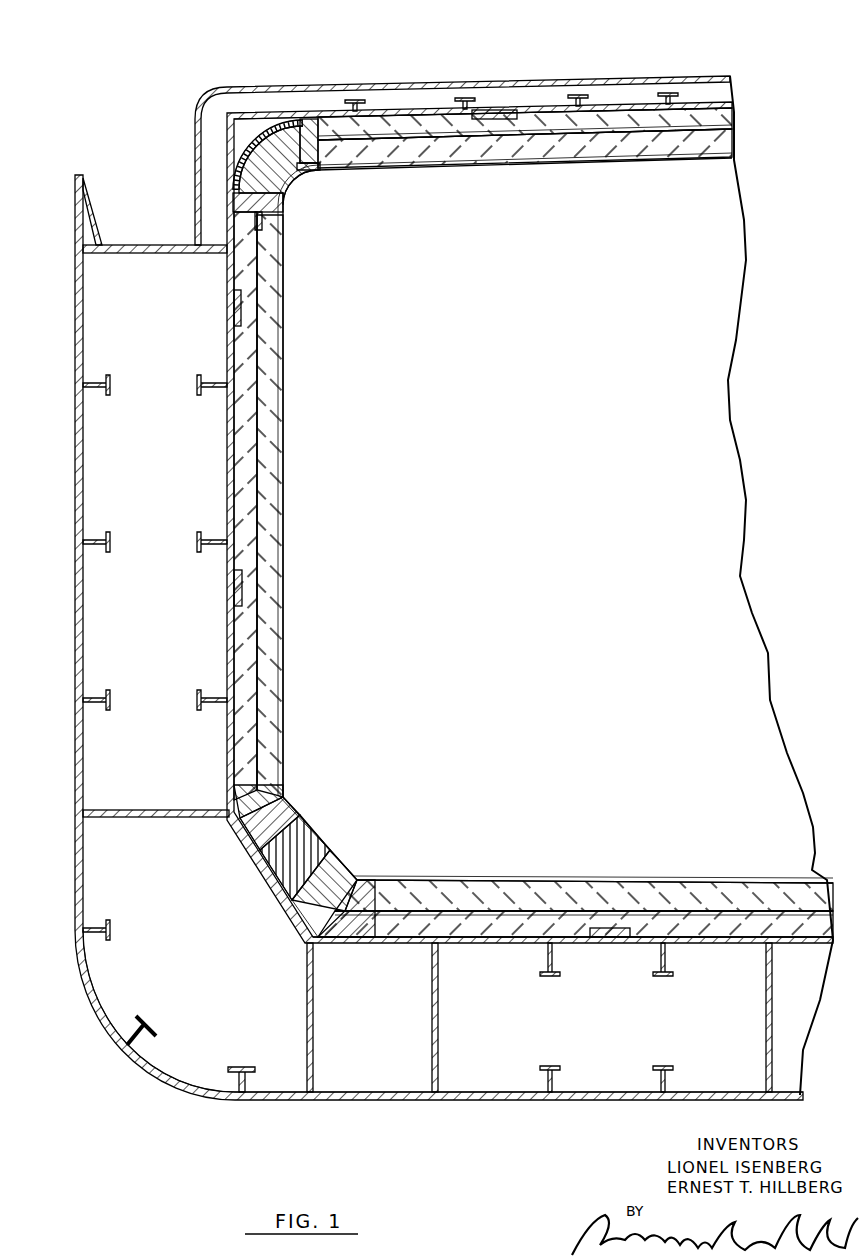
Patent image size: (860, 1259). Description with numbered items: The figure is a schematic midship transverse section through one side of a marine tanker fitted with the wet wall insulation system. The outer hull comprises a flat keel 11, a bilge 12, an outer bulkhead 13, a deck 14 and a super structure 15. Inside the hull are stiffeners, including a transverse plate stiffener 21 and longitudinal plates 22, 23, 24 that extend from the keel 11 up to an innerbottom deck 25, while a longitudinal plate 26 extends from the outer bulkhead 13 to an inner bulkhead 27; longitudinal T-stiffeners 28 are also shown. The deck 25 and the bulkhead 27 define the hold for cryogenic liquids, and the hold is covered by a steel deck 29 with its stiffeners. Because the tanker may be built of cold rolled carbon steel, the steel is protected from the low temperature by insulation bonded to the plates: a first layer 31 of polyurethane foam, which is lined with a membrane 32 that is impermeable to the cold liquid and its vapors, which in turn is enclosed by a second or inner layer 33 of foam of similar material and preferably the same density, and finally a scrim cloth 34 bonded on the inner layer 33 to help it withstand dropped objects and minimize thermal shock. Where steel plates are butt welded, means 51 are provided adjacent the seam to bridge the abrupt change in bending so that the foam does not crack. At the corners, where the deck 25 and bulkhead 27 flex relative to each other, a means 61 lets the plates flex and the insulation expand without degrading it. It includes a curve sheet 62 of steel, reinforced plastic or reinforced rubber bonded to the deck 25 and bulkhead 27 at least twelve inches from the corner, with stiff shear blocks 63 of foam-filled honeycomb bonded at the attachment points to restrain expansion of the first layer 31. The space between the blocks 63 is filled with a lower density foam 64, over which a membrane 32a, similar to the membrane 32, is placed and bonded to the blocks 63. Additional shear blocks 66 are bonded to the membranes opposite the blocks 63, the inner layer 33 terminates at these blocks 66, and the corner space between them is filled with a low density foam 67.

The flat keel 11 is at (478, 1098).
The bilge 12 is at (85, 990).
The outer bulkhead 13 is at (78, 570).
The deck 14 is at (122, 245).
The super structure 15 is at (378, 70).
The transverse plate stiffener 21 is at (378, 808).
The longitudinal plate 22 is at (773, 1035).
The longitudinal plate 23 is at (438, 1000).
The longitudinal plate 24 is at (313, 1015).
The innerbottom deck 25 is at (688, 943).
The longitudinal plate 26 is at (196, 810).
The inner bulkhead 27 is at (226, 460).
The longitudinal T-stiffeners 28 is at (100, 380).
The steel deck 29 is at (535, 106).
The first layer of insulation foam 31 is at (724, 128).
The membrane 32 is at (822, 912).
The membrane 32a is at (273, 153).
The second layer of insulation foam 33 is at (588, 155).
The scrim cloth 34 is at (680, 883).
The means for bridging discontinuity 51 is at (500, 106).
The corner means 61 is at (284, 450).
The curve sheet 62 is at (252, 120).
The shear blocks 63 is at (312, 118).
The foam 64 is at (247, 163).
The additional shear blocks 66 is at (320, 172).
The low density foam 67 is at (297, 183).